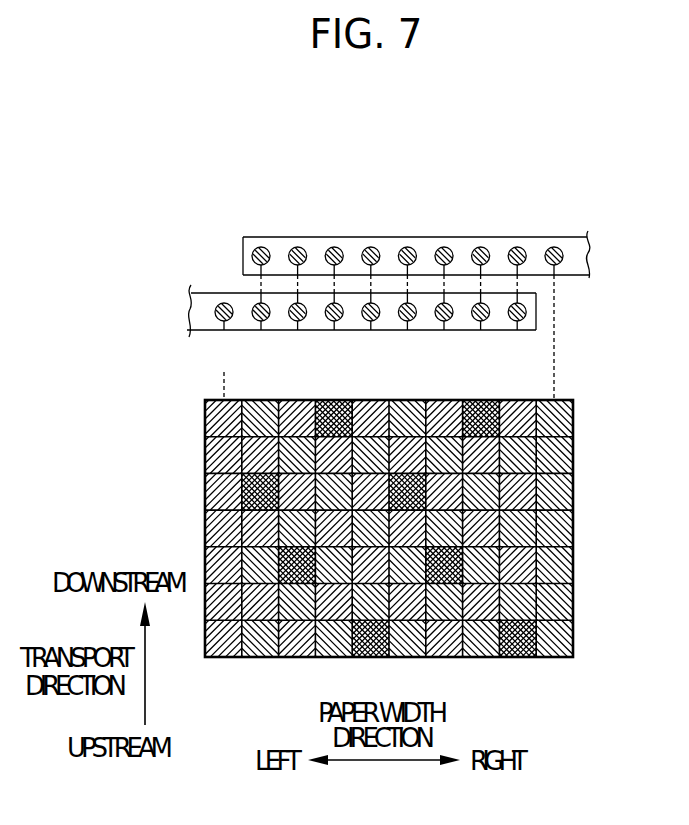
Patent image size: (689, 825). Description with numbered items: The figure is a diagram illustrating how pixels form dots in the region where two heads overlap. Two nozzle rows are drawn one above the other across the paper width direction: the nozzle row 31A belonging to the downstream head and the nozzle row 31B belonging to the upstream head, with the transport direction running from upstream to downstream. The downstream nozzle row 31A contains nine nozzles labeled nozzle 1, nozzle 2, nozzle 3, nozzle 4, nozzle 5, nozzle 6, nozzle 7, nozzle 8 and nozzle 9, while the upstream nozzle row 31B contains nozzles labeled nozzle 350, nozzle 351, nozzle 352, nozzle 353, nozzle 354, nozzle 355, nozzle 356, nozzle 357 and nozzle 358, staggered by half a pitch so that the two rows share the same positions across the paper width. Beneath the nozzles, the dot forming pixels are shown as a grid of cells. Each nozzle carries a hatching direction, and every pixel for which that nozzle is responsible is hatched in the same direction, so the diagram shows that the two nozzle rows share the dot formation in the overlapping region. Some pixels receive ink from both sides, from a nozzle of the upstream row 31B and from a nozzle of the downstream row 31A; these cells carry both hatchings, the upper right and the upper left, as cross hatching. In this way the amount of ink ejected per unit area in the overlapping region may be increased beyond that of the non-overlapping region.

The first nozzle row 31A is at (436, 225).
The second nozzle row 31B is at (363, 314).
The nozzle #1 of nozzle row 31A 1 is at (261, 246).
The nozzle #2 of nozzle row 31A 2 is at (298, 246).
The nozzle #3 of nozzle row 31A 3 is at (334, 246).
The nozzle #4 of nozzle row 31A 4 is at (371, 246).
The nozzle #5 of nozzle row 31A 5 is at (407, 246).
The nozzle #6 of nozzle row 31A 6 is at (444, 246).
The nozzle #7 of nozzle row 31A 7 is at (481, 246).
The nozzle #8 of nozzle row 31A 8 is at (517, 246).
The nozzle #9 of nozzle row 31A 9 is at (554, 246).
The nozzle #350 of nozzle row 31B 350 is at (224, 330).
The nozzle #351 of nozzle row 31B 351 is at (261, 330).
The nozzle #352 of nozzle row 31B 352 is at (298, 330).
The nozzle #353 of nozzle row 31B 353 is at (334, 330).
The nozzle #354 of nozzle row 31B 354 is at (371, 330).
The nozzle #355 of nozzle row 31B 355 is at (407, 330).
The nozzle #356 of nozzle row 31B 356 is at (444, 330).
The nozzle #357 of nozzle row 31B 357 is at (481, 330).
The nozzle #358 of nozzle row 31B 358 is at (517, 330).